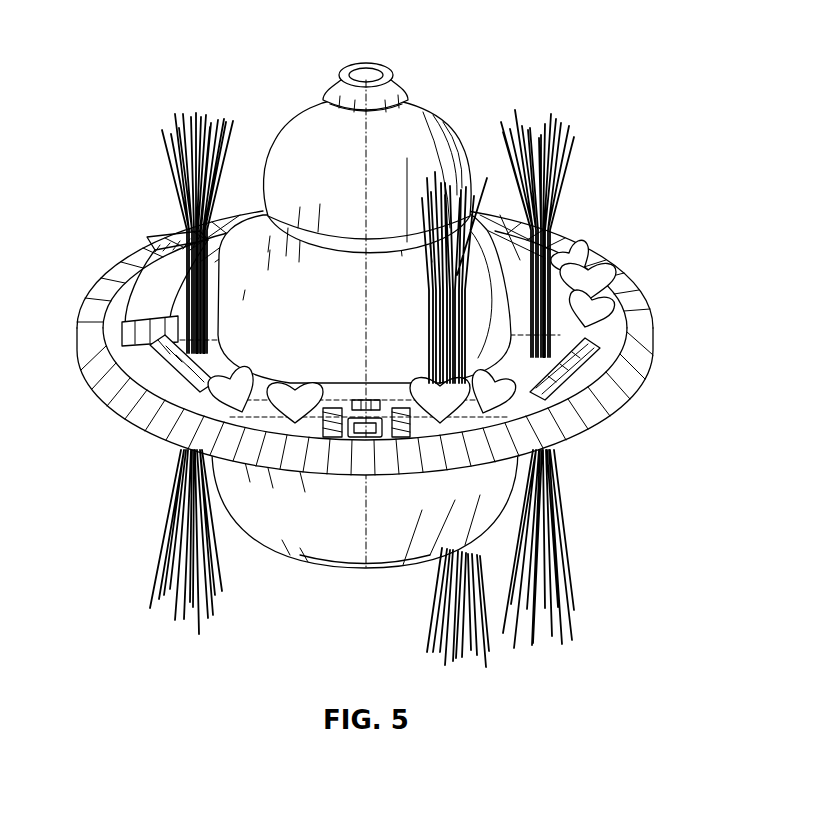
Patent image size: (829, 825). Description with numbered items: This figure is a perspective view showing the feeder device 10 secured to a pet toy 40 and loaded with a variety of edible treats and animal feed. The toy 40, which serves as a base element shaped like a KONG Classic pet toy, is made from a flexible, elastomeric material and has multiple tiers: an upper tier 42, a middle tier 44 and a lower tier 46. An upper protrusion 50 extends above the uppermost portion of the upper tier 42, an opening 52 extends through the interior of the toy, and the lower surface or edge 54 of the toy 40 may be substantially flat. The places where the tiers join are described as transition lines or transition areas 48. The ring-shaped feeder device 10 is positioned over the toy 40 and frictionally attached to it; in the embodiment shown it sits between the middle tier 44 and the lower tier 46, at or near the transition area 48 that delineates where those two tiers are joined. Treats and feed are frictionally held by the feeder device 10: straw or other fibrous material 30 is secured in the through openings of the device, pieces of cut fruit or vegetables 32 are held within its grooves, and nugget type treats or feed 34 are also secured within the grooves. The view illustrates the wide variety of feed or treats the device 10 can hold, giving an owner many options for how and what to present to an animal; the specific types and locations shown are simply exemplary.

The feeder device 10 is at (400, 339).
The straw or other fibrous material 30 is at (175, 183).
The pieces of cut fruit or vegetables 32 is at (140, 272).
The nugget type treats or feed 34 is at (237, 380).
The pet toy 40 is at (310, 339).
The upper tier 42 is at (356, 182).
The middle tier 44 is at (352, 319).
The lower tier 46 is at (334, 527).
The transition line or transition area 48 is at (373, 112).
The upper protrusion 50 is at (327, 90).
The opening 52 is at (364, 67).
The lower surface or edge 54 is at (370, 570).